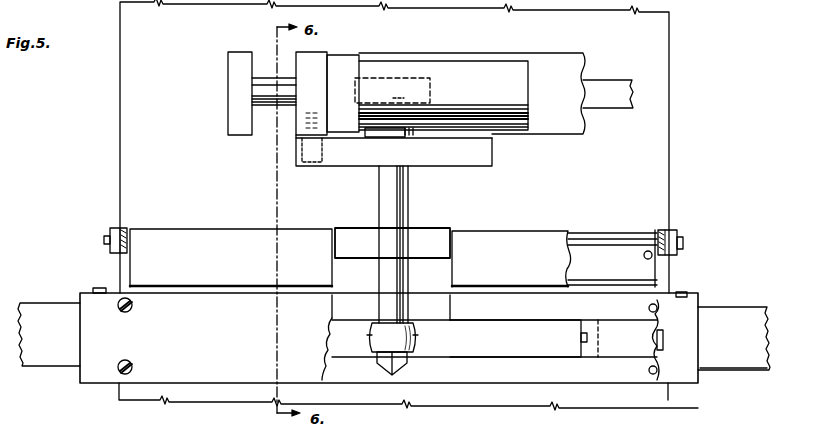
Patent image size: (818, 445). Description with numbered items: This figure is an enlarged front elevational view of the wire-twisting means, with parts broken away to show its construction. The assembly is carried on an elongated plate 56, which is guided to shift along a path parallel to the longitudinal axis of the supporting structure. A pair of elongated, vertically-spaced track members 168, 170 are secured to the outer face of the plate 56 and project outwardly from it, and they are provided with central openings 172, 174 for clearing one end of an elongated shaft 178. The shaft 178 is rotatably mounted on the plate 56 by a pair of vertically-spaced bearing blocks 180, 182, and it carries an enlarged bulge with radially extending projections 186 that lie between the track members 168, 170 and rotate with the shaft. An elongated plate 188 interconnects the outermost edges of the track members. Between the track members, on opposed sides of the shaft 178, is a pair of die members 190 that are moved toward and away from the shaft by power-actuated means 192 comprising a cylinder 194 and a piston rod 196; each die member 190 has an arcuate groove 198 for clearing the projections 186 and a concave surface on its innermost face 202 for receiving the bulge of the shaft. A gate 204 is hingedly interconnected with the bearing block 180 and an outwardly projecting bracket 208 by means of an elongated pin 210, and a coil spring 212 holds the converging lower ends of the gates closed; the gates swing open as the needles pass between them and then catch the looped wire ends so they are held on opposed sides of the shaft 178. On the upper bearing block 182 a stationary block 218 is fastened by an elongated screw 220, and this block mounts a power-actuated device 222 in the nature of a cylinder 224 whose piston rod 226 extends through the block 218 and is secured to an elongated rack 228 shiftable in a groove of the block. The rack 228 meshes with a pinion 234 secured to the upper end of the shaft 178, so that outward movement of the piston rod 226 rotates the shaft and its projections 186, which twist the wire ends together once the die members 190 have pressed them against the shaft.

The elongated plate 56 is at (658, 142).
The track member 168 is at (518, 310).
The track member 170 is at (515, 370).
The central opening 172 is at (427, 303).
The central opening 174 is at (428, 372).
The elongated shaft 178 is at (398, 200).
The bearing block 180 is at (430, 237).
The bearing block 182 is at (478, 155).
The radially extending projections 186 is at (417, 336).
The elongated plate 188 is at (690, 310).
The die member 190 is at (607, 347).
The power-actuated means 192 is at (729, 373).
The cylinder 194 is at (43, 310).
The piston rod 196 is at (662, 338).
The arcuate groove 198 is at (585, 342).
The innermost face 202 is at (582, 337).
The gate 204 is at (178, 243).
The bracket 208 is at (115, 227).
The elongated pin 210 is at (105, 239).
The coil spring 212 is at (645, 258).
The stationary block 218 is at (317, 62).
The elongated screw 220 is at (315, 167).
The power-actuated device 222 is at (449, 75).
The cylinder 224 is at (525, 95).
The piston rod 226 is at (275, 90).
The elongated rack 228 is at (608, 90).
The pinion 234 is at (400, 79).